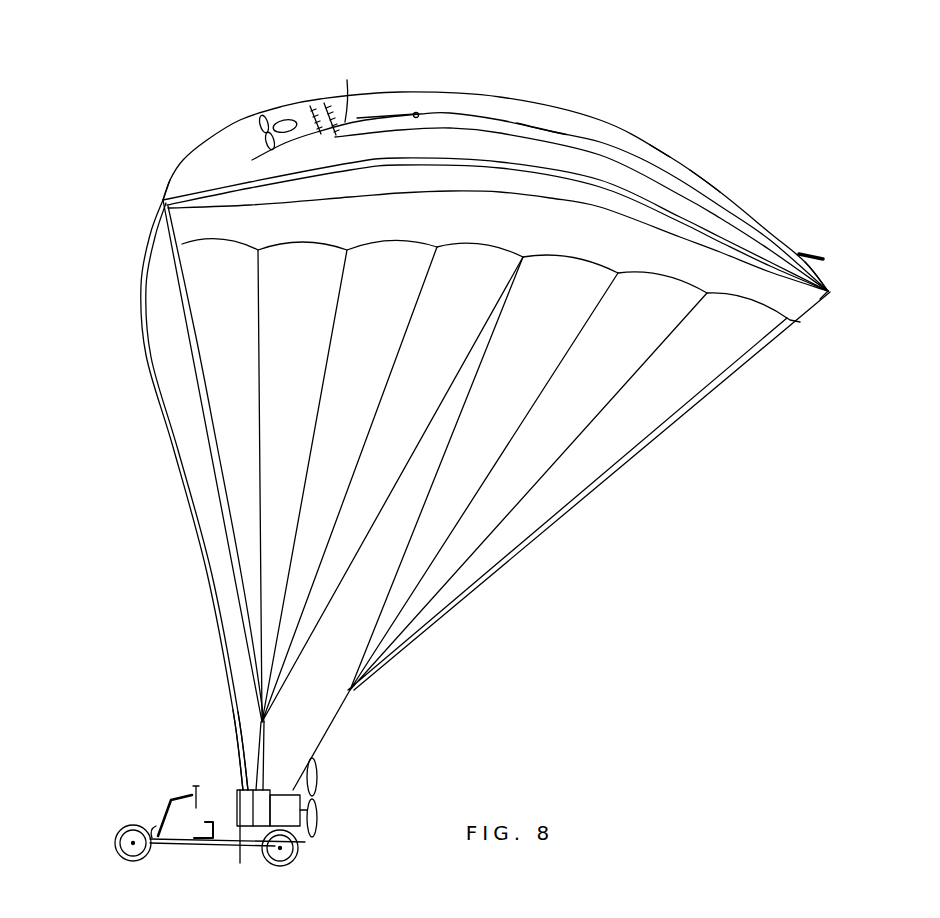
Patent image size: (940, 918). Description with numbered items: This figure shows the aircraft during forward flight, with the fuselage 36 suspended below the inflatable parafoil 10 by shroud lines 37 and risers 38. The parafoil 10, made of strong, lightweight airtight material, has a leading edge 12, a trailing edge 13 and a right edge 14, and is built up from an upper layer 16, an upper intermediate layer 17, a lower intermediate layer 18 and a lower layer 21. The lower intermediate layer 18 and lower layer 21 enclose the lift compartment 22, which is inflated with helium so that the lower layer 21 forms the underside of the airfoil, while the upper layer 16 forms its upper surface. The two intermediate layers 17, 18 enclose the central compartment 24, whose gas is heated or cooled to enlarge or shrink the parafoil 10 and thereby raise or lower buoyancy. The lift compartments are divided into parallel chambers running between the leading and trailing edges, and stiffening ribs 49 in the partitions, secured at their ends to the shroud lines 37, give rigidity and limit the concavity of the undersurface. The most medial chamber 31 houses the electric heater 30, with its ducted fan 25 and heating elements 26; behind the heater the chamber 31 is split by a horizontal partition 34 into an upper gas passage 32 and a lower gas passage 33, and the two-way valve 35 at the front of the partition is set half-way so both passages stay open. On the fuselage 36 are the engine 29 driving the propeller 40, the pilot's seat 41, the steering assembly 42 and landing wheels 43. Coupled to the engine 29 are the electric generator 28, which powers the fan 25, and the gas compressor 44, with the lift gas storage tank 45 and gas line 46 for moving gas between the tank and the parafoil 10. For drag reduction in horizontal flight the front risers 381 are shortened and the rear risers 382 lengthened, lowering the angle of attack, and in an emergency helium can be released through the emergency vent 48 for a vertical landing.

The inflatable parafoil 10 is at (185, 132).
The leading edge 12 is at (158, 198).
The trailing edge 13 is at (832, 293).
The right edge 14 is at (387, 243).
The upper layer 16 is at (620, 131).
The upper intermediate layer 17 is at (667, 158).
The lower intermediate layer 18 is at (703, 181).
The lower layer 21 is at (510, 197).
The lift compartment 22 is at (430, 182).
The central compartment 24 is at (440, 159).
The ducted fan 25 is at (260, 118).
The heating elements 26 is at (318, 103).
The electric generator 28 is at (262, 800).
The engine 29 is at (283, 807).
The electric heater 30 is at (290, 115).
The chamber 31 is at (344, 88).
The upper gas passage 32 is at (553, 122).
The lower gas passage 33 is at (467, 127).
The horizontal partition 34 is at (443, 113).
The two-way valve 35 is at (395, 113).
The fuselage 36 is at (197, 845).
The shroud lines 37 is at (258, 337).
The risers 38 is at (262, 742).
The front risers 381 is at (235, 742).
The rear risers 382 is at (333, 726).
The propeller 40 is at (318, 772).
The pilot's seat 41 is at (215, 818).
The steering assembly 42 is at (173, 796).
The landing wheels 43 is at (113, 843).
The gas compressor 44 is at (238, 797).
The lift gas storage tank 45 is at (237, 840).
The gas line 46 is at (210, 563).
The emergency vent 48 is at (824, 254).
The stiffening ribs 49 is at (357, 168).